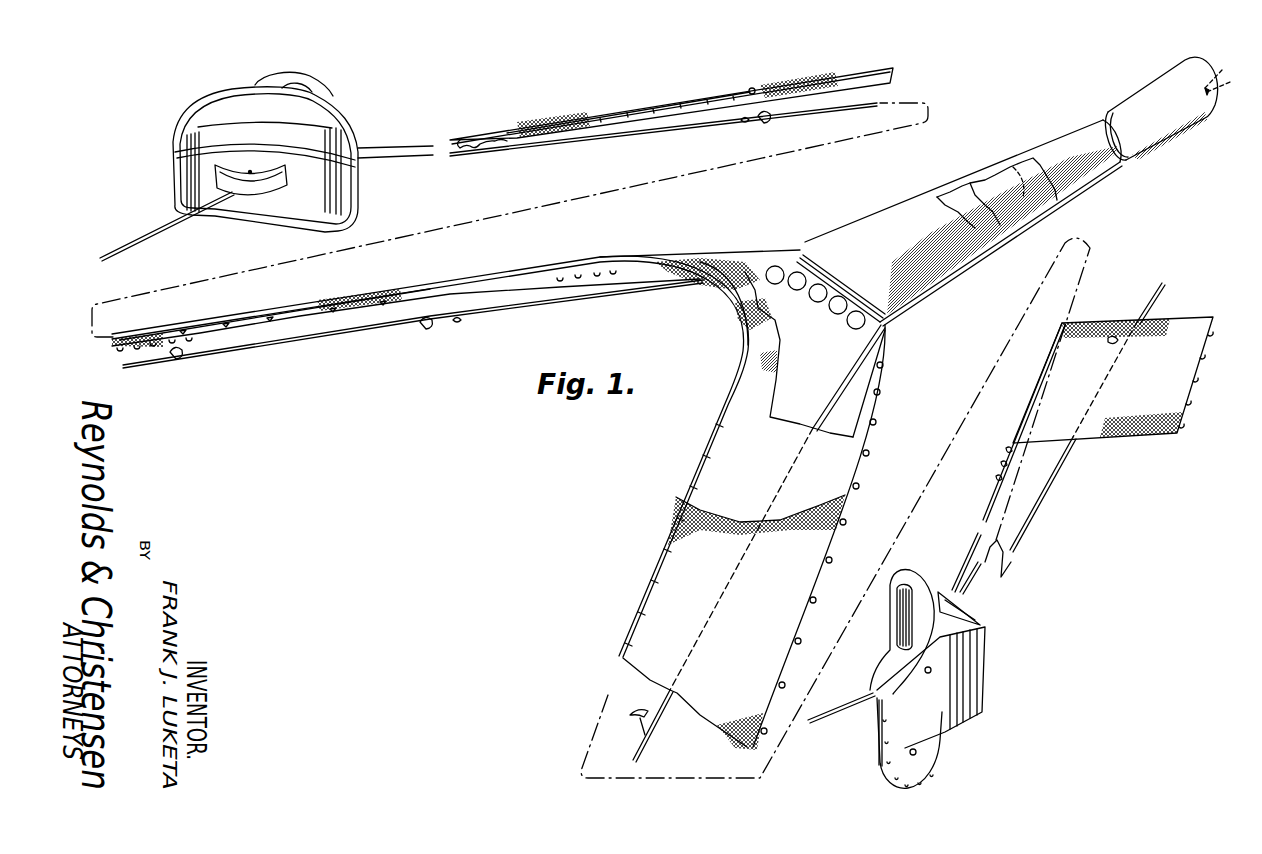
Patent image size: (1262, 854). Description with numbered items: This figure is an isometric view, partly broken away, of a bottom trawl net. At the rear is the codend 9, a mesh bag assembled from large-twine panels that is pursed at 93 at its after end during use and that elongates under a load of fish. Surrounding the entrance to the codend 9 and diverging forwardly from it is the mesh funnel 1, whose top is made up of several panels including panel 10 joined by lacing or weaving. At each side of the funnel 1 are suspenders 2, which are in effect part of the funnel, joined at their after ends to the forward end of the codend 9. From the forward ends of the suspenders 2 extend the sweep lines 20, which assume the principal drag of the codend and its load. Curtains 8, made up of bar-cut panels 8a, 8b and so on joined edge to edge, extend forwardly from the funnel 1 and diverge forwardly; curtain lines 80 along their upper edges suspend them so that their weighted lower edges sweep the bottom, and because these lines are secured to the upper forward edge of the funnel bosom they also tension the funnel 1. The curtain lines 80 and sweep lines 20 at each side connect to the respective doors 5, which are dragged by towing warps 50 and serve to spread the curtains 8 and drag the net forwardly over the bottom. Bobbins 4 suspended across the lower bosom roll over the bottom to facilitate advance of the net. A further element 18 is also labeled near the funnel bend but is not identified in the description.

The funnel 1 is at (896, 196).
The suspenders 2 is at (805, 250).
The bobbins 4 is at (848, 320).
The doors 5 is at (335, 132).
The curtains 8 is at (727, 88).
The curtain panel 8a is at (637, 258).
The curtain panel 8b is at (225, 325).
The codend 9 is at (1100, 100).
The funnel top panel 10 is at (722, 298).
The lashing 18 is at (712, 272).
The sweep lines 20 is at (653, 134).
The towing warps 50 is at (122, 258).
The curtain lines 80 is at (614, 114).
The pursed after end 93 is at (1205, 86).